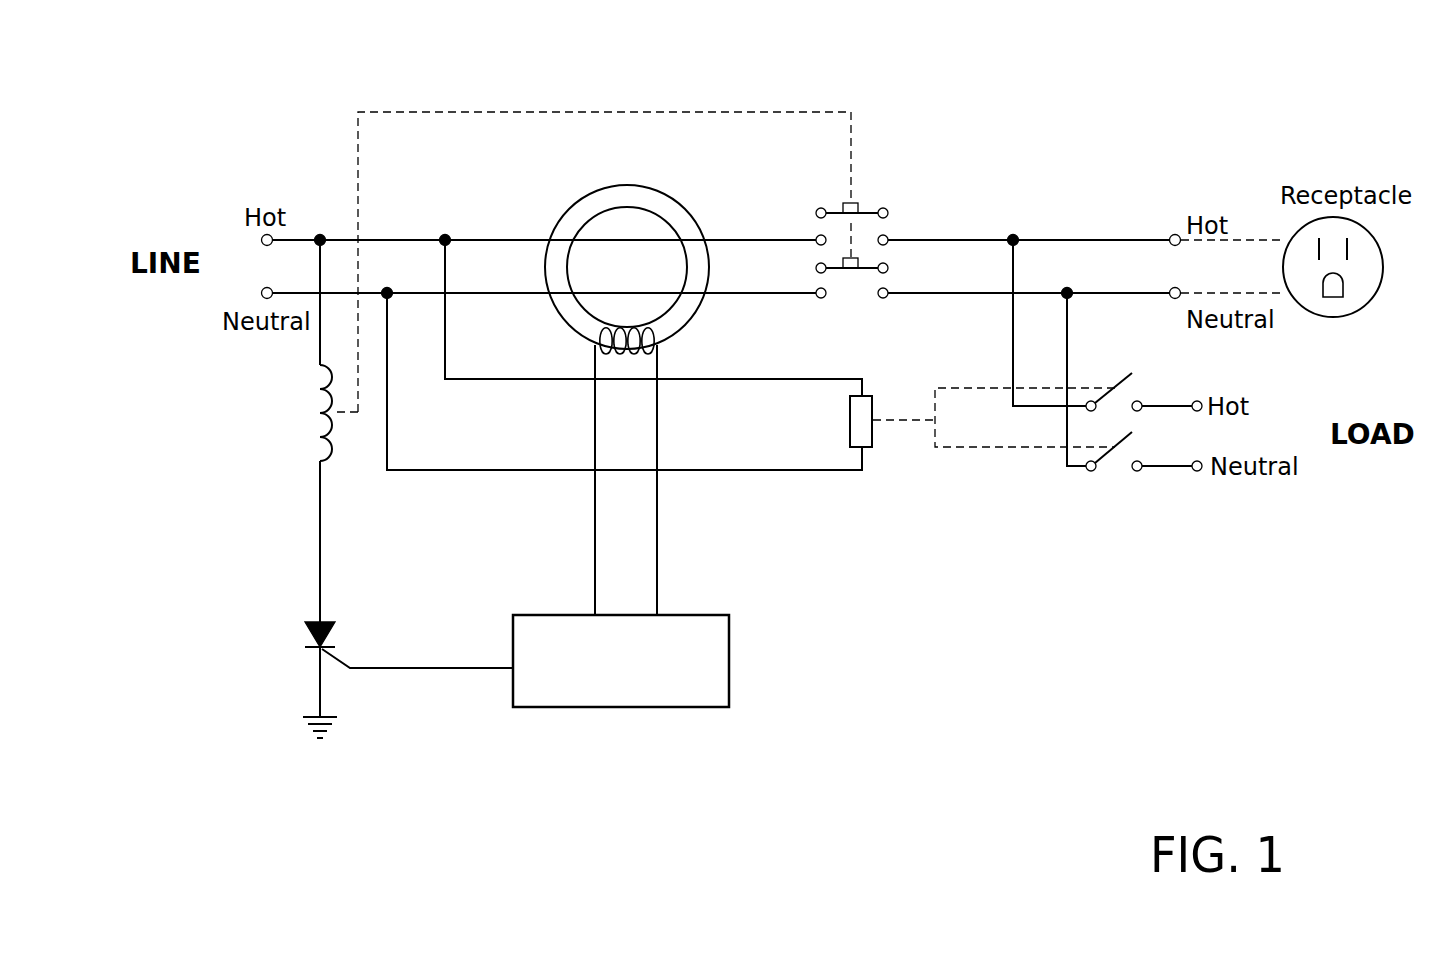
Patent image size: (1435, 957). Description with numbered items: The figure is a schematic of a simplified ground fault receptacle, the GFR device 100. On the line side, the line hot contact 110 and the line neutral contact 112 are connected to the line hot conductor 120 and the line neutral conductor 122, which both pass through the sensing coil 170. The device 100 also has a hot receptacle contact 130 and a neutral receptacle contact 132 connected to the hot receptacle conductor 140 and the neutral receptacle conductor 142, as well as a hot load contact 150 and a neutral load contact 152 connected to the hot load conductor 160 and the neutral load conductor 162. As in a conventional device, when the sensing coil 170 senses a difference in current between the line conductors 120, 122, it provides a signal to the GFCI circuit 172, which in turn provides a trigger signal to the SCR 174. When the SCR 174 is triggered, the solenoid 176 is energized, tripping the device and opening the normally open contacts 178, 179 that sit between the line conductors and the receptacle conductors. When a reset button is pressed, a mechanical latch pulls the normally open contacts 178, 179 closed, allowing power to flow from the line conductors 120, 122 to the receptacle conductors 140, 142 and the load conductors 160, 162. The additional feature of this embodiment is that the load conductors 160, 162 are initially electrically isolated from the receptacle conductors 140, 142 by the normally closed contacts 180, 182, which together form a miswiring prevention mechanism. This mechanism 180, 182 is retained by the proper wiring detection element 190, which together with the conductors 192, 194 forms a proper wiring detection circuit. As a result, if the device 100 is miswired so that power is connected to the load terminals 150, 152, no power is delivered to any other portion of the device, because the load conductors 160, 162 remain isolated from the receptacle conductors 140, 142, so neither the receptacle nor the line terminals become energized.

The GFR device 100 is at (1104, 124).
The line hot contact 110 is at (262, 240).
The line neutral contact 112 is at (262, 293).
The line hot conductor 120 is at (497, 238).
The line neutral conductor 122 is at (495, 296).
The hot receptacle contact 130 is at (1172, 236).
The neutral receptacle contact 132 is at (1172, 290).
The hot receptacle conductor 140 is at (1048, 238).
The neutral receptacle conductor 142 is at (957, 296).
The hot load contact 150 is at (1200, 400).
The neutral load contact 152 is at (1199, 472).
The hot load conductor 160 is at (1165, 402).
The neutral load conductor 162 is at (1165, 470).
The sensing coil 170 is at (686, 212).
The GFCI circuit 172 is at (643, 678).
The SCR 174 is at (305, 634).
The solenoid 176 is at (312, 413).
The normally open contact 178 is at (868, 212).
The normally open contact 179 is at (852, 280).
The normally closed contact 180 is at (1122, 372).
The normally closed contact 182 is at (1108, 455).
The proper wiring detection element 190 is at (849, 414).
The conductor 192 is at (742, 378).
The conductor 194 is at (757, 472).